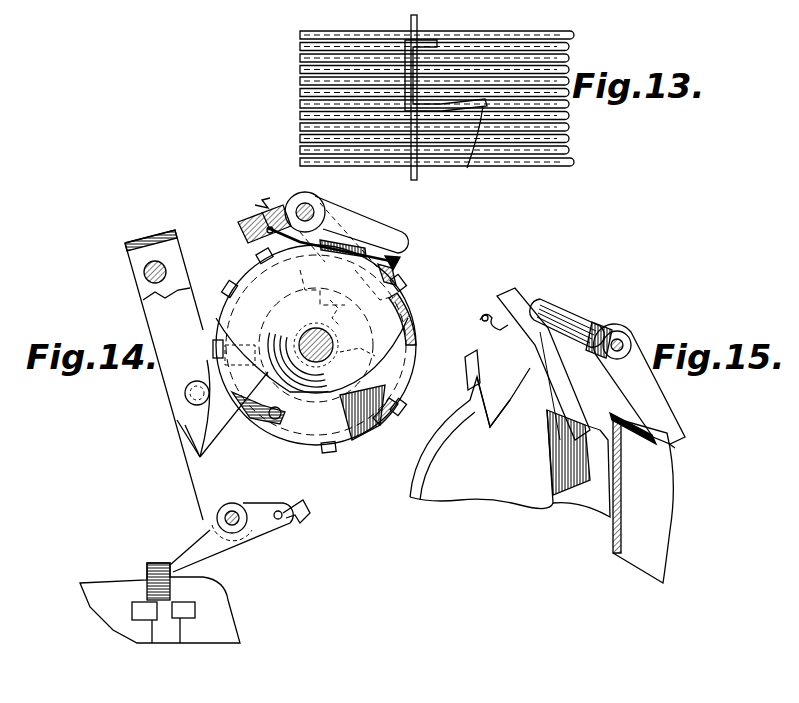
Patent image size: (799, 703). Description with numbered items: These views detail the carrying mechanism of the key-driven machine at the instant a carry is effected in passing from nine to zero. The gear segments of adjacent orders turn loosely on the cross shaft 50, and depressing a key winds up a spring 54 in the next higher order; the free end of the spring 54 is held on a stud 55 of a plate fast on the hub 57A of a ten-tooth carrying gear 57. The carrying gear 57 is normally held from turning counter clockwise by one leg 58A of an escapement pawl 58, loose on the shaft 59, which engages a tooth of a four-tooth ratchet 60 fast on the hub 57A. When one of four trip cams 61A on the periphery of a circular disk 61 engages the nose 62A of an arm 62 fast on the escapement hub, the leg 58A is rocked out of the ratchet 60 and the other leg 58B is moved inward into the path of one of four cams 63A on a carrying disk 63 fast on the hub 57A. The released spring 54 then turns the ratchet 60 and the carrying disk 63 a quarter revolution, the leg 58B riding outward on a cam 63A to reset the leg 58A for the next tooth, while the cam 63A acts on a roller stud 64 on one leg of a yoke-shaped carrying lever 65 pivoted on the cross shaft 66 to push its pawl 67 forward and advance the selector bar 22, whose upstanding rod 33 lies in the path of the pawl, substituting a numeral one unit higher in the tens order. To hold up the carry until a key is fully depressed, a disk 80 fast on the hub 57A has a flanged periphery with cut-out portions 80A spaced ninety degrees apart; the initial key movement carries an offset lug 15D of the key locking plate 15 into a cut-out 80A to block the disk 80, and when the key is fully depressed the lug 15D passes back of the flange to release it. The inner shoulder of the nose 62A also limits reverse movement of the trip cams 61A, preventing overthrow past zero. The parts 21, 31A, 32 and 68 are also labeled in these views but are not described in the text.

In FIG. 14, the key locking plate 15 is at (180, 416).
In FIG. 14, the offset lug 15D is at (214, 348).
In FIG. 13, the base bar 21 is at (566, 166).
In FIG. 13, the selector bar 22 is at (560, 154).
In FIG. 14, the selector bar 22 is at (225, 630).
In FIG. 13, the bracket 31A is at (440, 42).
In FIG. 13, the rod 32 is at (415, 177).
In FIG. 13, the rod 33 is at (470, 166).
In FIG. 14, the rod 33 is at (172, 629).
In FIG. 14, the cross shaft 50 is at (325, 338).
In FIG. 14, the spring 54 is at (311, 383).
In FIG. 14, the stud 55 is at (273, 426).
In FIG. 14, the carrying gear 57 is at (290, 329).
In FIG. 14, the hub 57A is at (345, 360).
In FIG. 15, the escapement pawl 58 is at (565, 297).
In FIG. 14, the escapement pawl leg 58A is at (393, 319).
In FIG. 15, the escapement pawl leg 58A is at (590, 426).
In FIG. 14, the escapement pawl leg 58B is at (245, 221).
In FIG. 15, the escapement pawl leg 58B is at (466, 368).
In FIG. 15, the shaft 59 is at (516, 298).
In FIG. 14, the ratchet 60 is at (255, 318).
In FIG. 15, the ratchet 60 is at (595, 504).
In FIG. 15, the circular disk 61 is at (685, 521).
In FIG. 14, the trip cam 61A is at (390, 267).
In FIG. 15, the trip cam 61A is at (651, 441).
In FIG. 14, the arm 62 is at (368, 200).
In FIG. 15, the arm 62 is at (668, 407).
In FIG. 14, the nose 62A is at (398, 252).
In FIG. 15, the nose 62A is at (675, 448).
In FIG. 15, the carrying disk 63 is at (495, 505).
In FIG. 14, the cam 63A is at (330, 447).
In FIG. 15, the cam 63A is at (488, 426).
In FIG. 14, the roller stud 64 is at (185, 392).
In FIG. 14, the carrying lever 65 is at (190, 456).
In FIG. 14, the cross shaft 66 is at (145, 272).
In FIG. 14, the pawl 67 is at (270, 538).
In FIG. 14, the notch 68 is at (320, 296).
In FIG. 14, the disk 80 is at (206, 318).
In FIG. 14, the cut-out portion 80A is at (400, 409).